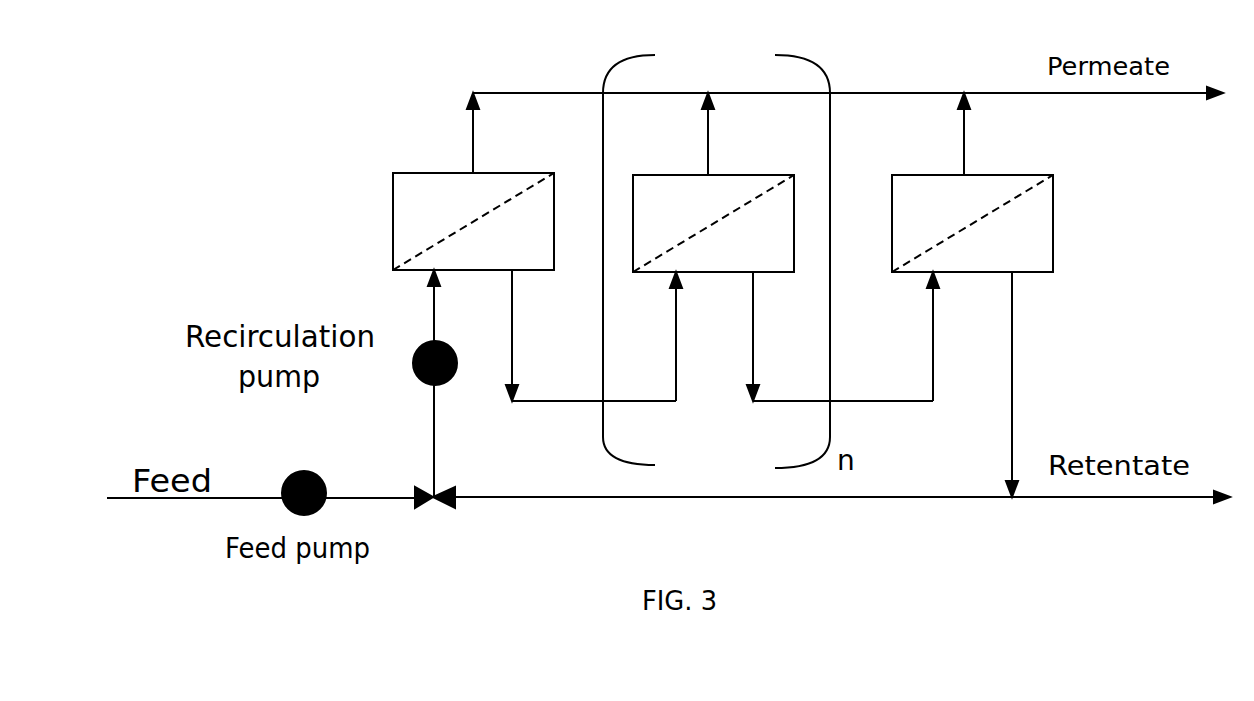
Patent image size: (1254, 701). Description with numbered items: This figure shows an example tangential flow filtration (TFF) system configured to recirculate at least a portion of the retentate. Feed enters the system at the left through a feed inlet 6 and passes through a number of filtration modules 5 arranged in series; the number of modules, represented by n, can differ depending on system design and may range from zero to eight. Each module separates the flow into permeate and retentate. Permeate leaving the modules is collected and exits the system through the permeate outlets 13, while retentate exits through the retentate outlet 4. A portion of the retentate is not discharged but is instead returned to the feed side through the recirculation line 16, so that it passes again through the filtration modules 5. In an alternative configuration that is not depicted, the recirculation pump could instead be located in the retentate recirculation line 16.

The permeate outlet 13 is at (478, 140).
The filtration module 5 is at (387, 219).
The feed inlet 6 is at (427, 310).
The retentate outlet 4 is at (1022, 344).
The recirculation line 16 is at (585, 506).